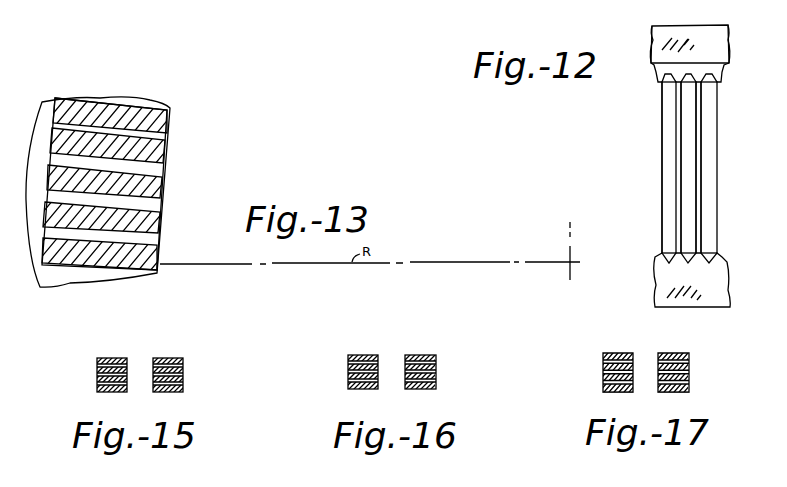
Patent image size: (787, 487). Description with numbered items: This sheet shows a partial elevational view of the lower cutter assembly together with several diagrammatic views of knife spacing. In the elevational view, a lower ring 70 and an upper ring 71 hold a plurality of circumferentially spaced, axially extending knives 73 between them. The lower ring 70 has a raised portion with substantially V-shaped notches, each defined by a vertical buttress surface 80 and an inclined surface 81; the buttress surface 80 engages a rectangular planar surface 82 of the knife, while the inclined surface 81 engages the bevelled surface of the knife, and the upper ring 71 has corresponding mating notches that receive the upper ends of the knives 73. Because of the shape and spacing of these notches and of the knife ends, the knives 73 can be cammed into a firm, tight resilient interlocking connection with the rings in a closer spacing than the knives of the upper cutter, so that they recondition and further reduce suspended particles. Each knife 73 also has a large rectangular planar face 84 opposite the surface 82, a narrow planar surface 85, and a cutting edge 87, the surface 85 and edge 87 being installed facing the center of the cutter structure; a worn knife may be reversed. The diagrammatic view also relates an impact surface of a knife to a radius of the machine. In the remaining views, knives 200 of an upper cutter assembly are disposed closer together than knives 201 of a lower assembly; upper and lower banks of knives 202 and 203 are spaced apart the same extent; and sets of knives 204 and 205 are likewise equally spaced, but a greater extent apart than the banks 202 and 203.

In FIG. 12, the lower ring 70 is at (718, 293).
In FIG. 12, the upper ring 71 is at (729, 36).
In FIG. 12, the knives 73 is at (694, 126).
In FIG. 12, the vertical buttress surface 80 is at (652, 63).
In FIG. 12, the inclined surface 81 is at (728, 64).
In FIG. 12, the rectangular planar surface 82 is at (661, 162).
In FIG. 12, the large rectangular planar face 84 is at (698, 162).
In FIG. 12, the narrow planar surface 85 is at (690, 195).
In FIG. 12, the cutting edge 87 is at (697, 218).
In FIG. 15, the knives of upper cutter assembly 200 is at (128, 356).
In FIG. 15, the knives of lower assembly 201 is at (188, 344).
In FIG. 16, the upper bank of knives 202 is at (378, 353).
In FIG. 16, the lower bank of knives 203 is at (444, 343).
In FIG. 17, the upper set of knives 204 is at (633, 351).
In FIG. 17, the lower set of knives 205 is at (689, 351).